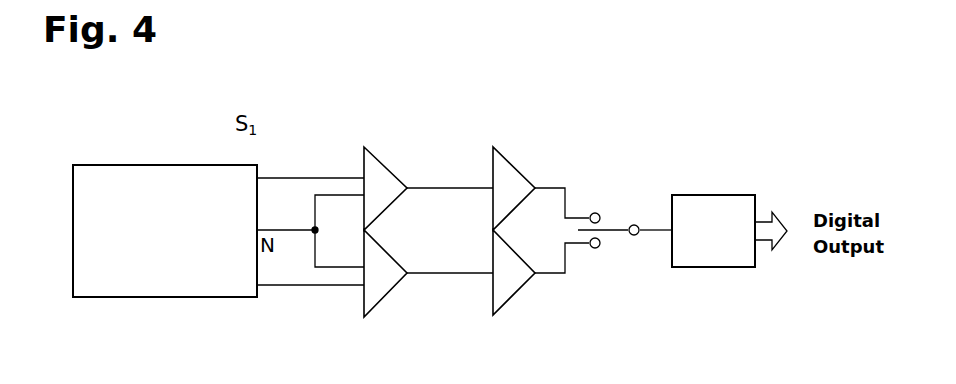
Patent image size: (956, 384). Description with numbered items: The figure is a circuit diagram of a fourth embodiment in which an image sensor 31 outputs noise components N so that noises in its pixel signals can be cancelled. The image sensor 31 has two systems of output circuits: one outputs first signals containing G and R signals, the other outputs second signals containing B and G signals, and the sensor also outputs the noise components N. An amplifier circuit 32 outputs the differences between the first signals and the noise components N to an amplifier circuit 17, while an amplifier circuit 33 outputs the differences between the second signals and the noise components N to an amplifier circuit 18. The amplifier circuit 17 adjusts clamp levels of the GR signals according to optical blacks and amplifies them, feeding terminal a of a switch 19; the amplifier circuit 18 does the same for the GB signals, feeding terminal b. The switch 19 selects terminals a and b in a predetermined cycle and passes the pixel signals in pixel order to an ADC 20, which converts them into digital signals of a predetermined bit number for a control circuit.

The image sensor 31 is at (163, 165).
The amplifier circuit 32 is at (374, 154).
The amplifier circuit 33 is at (375, 308).
The amplifier circuit 17 is at (505, 154).
The amplifier circuit 18 is at (505, 308).
The switch 19 is at (616, 217).
The ADC 20 is at (711, 195).